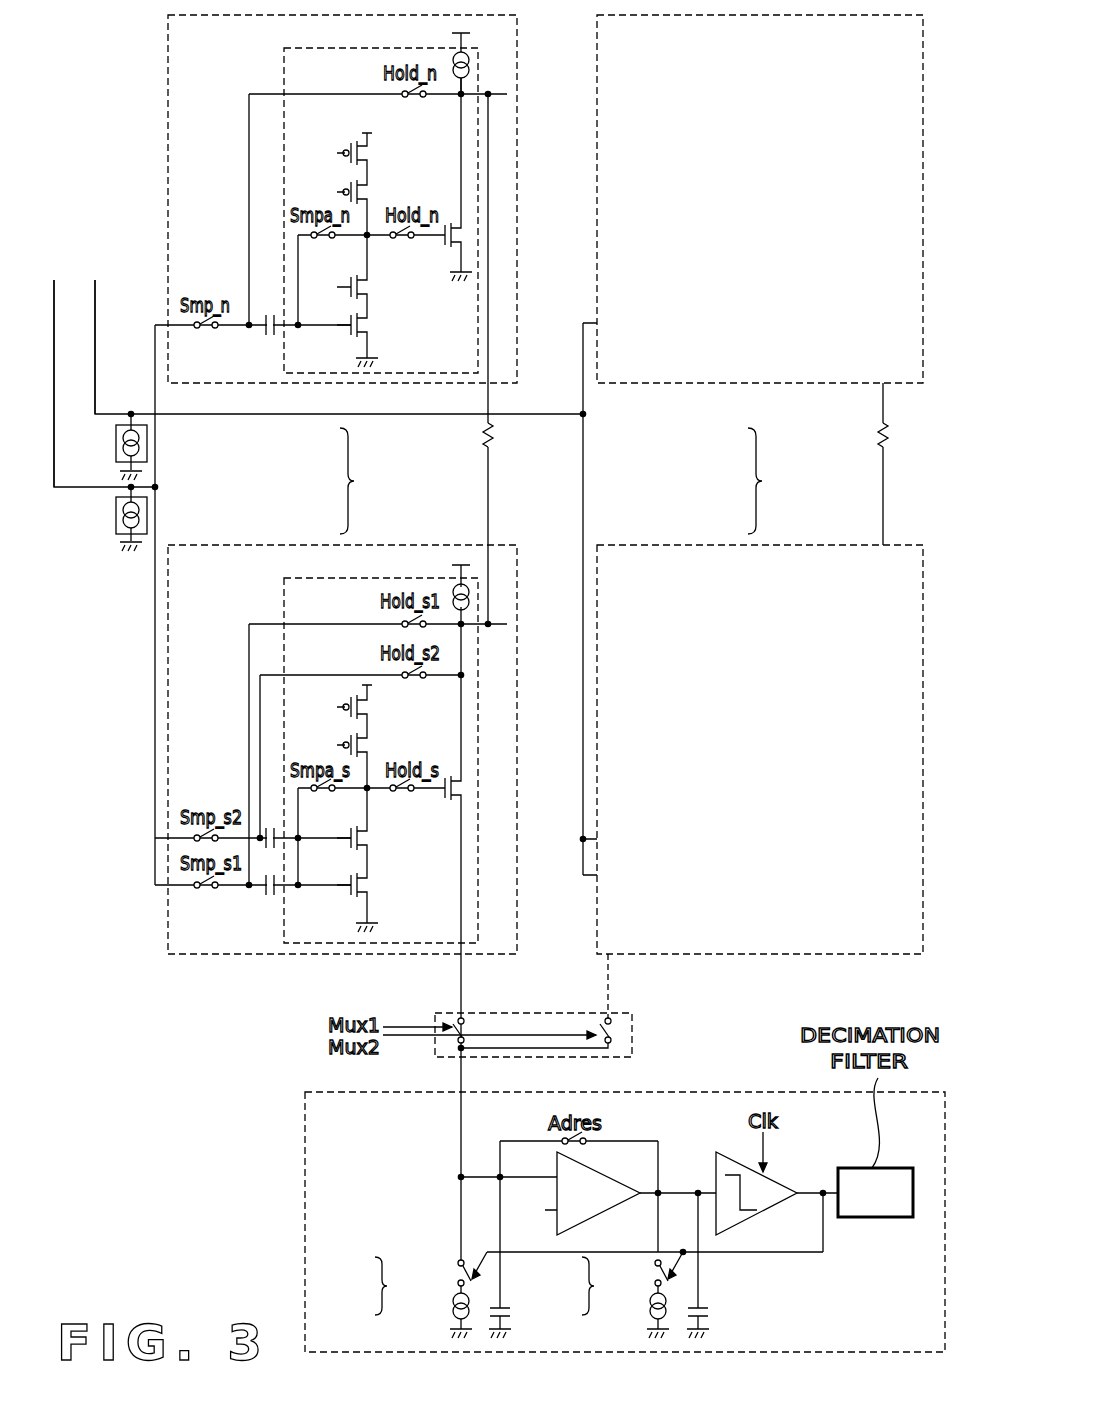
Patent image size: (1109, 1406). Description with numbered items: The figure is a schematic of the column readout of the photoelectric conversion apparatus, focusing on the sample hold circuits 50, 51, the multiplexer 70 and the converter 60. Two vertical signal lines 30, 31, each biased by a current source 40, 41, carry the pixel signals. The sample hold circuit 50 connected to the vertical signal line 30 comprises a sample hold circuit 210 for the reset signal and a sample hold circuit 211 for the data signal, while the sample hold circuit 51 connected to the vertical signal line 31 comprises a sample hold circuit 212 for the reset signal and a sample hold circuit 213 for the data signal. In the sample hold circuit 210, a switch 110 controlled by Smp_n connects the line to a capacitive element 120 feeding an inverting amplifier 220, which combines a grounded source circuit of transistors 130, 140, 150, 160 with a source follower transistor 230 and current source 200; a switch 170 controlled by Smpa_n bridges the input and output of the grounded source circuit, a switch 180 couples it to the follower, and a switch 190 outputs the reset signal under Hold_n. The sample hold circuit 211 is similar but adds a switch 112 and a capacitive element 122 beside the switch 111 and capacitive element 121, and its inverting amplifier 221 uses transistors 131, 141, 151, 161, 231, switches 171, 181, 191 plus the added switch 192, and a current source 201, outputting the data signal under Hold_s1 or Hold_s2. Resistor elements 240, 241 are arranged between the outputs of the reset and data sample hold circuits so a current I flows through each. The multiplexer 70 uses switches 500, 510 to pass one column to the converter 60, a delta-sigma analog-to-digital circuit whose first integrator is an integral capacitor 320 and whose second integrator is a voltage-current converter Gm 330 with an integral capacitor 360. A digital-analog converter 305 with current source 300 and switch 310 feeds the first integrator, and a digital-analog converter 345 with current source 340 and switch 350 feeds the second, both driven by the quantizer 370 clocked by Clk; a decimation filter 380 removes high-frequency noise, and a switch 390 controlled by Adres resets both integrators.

The vertical signal line 30 is at (56, 298).
The vertical signal line 31 is at (96, 298).
The current source 40 is at (116, 513).
The current source 41 is at (116, 443).
The sample hold circuit 50 is at (363, 481).
The sample hold circuit 51 is at (771, 481).
The converter 60 is at (740, 1092).
The multiplexer 70 is at (632, 1030).
The switch 110 is at (205, 333).
The switch 111 is at (205, 893).
The switch 112 is at (196, 806).
The capacitive element 120 is at (270, 336).
The capacitive element 121 is at (270, 896).
The capacitive element 122 is at (268, 826).
The transistor 130 is at (372, 325).
The transistor 131 is at (372, 885).
The transistor 140 is at (372, 287).
The transistor 141 is at (372, 838).
The transistor 150 is at (372, 196).
The transistor 151 is at (372, 749).
The transistor 160 is at (372, 153).
The transistor 161 is at (372, 707).
The switch 170 is at (322, 243).
The switch 171 is at (322, 796).
The switch 180 is at (401, 243).
The switch 181 is at (401, 796).
The switch 190 is at (414, 100).
The switch 191 is at (403, 621).
The switch 192 is at (403, 672).
The current source 200 is at (452, 63).
The current source 201 is at (452, 596).
The sample hold circuit 210 is at (207, 385).
The sample hold circuit 211 is at (207, 545).
The sample hold circuit 212 is at (612, 385).
The sample hold circuit 213 is at (615, 545).
The inverting amplifier 220 is at (284, 68).
The inverting amplifier 221 is at (284, 598).
The transistor 230 is at (466, 240).
The transistor 231 is at (466, 793).
The resistor element 240 is at (482, 437).
The resistor element 241 is at (877, 437).
The current source 300 is at (452, 1302).
The digital-analog converter 305 is at (353, 1286).
The switch 310 is at (456, 1267).
The integral capacitor 320 is at (512, 1312).
The voltage-current converter Gm 330 is at (598, 1220).
The current source 340 is at (652, 1302).
The digital-analog converter 345 is at (561, 1286).
The switch 350 is at (654, 1267).
The integral capacitor 360 is at (710, 1312).
The quantizer 370 is at (750, 1218).
The decimation filter 380 is at (875, 1192).
The switch 390 is at (590, 1140).
The switch 500 is at (464, 1030).
The switch 510 is at (604, 1020).